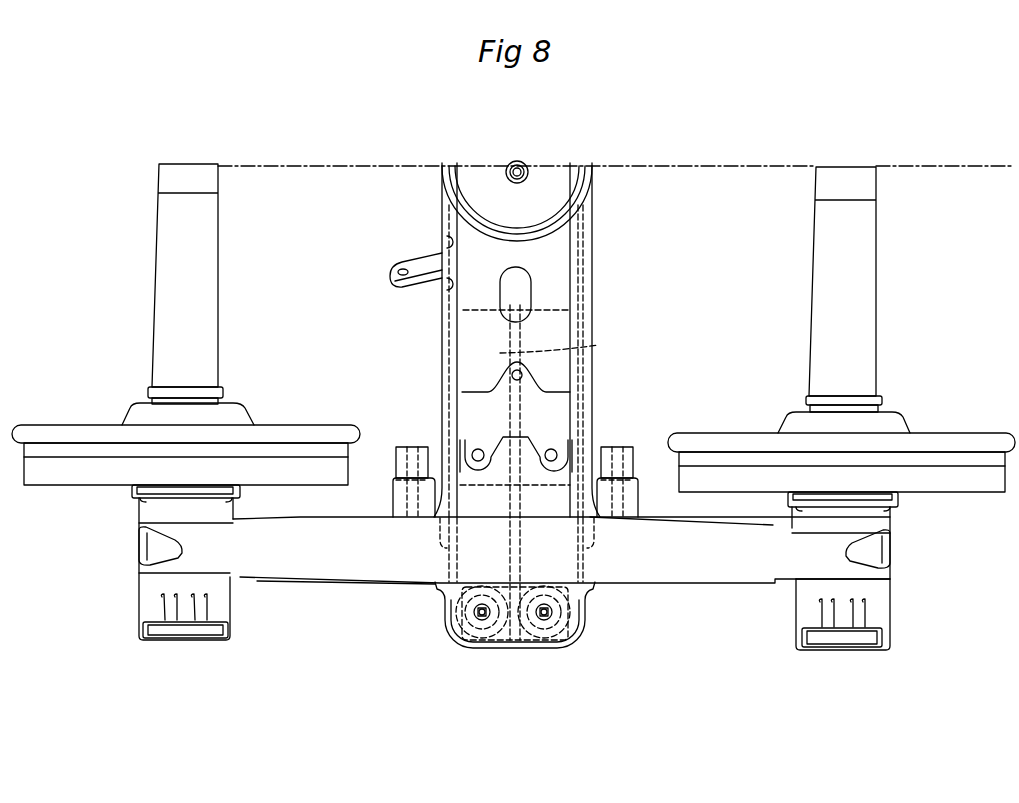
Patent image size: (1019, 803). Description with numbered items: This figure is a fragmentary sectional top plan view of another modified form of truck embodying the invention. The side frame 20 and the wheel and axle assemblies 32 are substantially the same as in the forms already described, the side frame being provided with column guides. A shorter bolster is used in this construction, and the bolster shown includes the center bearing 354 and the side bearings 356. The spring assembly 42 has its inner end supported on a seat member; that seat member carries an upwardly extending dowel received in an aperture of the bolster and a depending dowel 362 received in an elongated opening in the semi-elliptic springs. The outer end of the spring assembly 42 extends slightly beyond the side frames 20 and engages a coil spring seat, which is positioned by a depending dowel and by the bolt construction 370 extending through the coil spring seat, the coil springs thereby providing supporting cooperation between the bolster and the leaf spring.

The side frame 20 is at (393, 577).
The wheel and axle assembly 32 is at (76, 433).
The spring assembly 42 is at (562, 341).
The center bearing 354 is at (553, 174).
The side bearing 356 is at (555, 420).
The depending dowel 362 is at (503, 647).
The bolt construction 370 is at (480, 614).